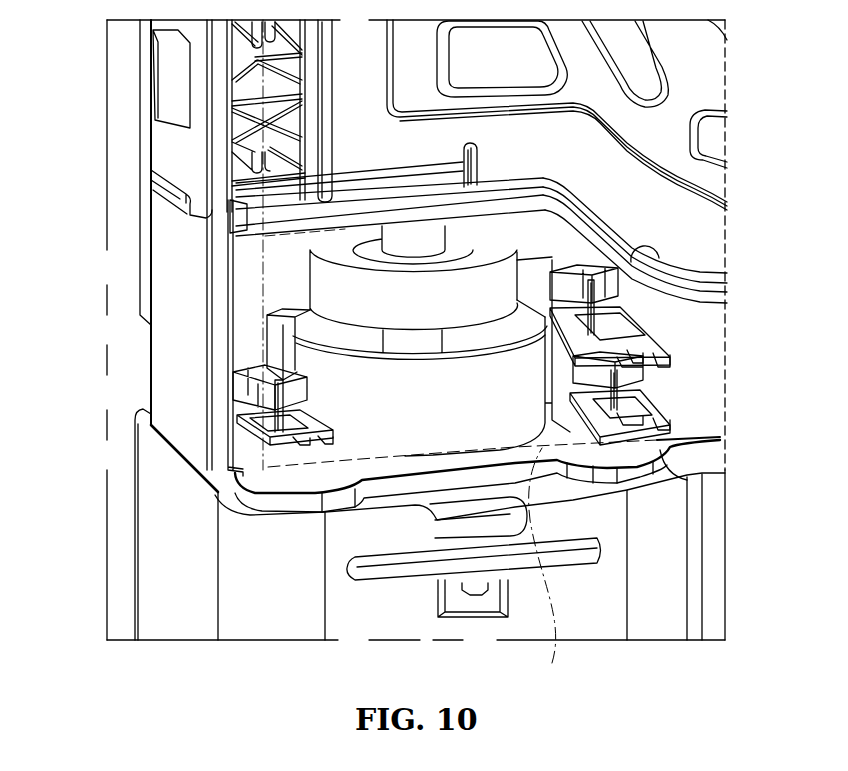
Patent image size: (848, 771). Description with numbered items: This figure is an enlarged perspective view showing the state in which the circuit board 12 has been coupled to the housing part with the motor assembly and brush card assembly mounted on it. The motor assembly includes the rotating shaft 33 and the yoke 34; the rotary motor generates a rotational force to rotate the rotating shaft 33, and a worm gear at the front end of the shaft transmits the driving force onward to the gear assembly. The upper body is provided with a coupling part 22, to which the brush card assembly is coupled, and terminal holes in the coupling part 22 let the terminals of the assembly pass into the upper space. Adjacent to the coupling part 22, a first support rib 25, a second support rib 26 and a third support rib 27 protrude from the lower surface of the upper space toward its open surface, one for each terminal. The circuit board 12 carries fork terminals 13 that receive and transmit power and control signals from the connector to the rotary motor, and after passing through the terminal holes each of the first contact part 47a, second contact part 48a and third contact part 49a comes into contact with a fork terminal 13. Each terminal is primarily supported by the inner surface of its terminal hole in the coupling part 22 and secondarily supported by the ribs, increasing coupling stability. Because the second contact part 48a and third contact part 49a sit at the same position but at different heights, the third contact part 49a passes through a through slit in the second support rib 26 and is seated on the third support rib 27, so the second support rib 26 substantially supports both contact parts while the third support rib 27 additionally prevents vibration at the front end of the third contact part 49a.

The circuit board 12 is at (546, 574).
The fork terminal 13 is at (243, 440).
The coupling part 22 is at (672, 458).
The first support rib 25 is at (250, 355).
The second support rib 26 is at (613, 340).
The third support rib 27 is at (660, 258).
The rotating shaft 33 is at (265, 236).
The yoke 34 is at (660, 555).
The first contact part 47a is at (240, 420).
The second contact part 48a is at (637, 383).
The third contact part 49a is at (620, 298).